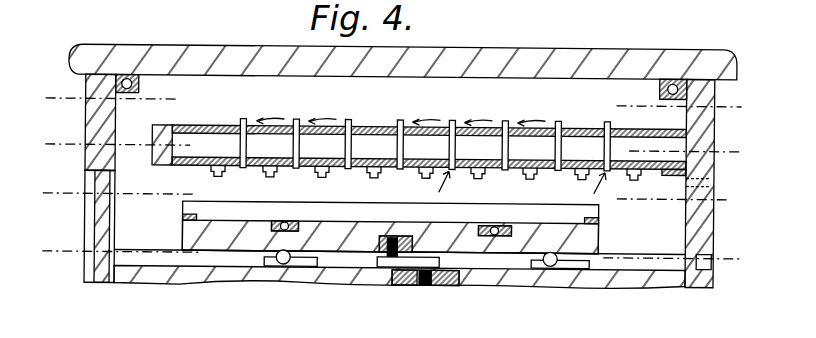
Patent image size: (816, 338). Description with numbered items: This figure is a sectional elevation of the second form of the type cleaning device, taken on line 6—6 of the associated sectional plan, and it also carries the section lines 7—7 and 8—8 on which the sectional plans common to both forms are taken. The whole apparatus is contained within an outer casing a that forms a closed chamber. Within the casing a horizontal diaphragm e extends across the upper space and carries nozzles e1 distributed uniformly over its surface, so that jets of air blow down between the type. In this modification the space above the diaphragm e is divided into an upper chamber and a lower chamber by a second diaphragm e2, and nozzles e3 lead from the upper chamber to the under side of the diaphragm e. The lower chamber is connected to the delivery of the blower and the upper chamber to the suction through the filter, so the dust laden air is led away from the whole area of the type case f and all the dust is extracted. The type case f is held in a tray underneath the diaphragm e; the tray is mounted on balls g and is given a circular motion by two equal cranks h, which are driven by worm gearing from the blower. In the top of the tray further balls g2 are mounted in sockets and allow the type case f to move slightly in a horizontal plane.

The outer casing a is at (100, 116).
The section line 6- 6 is at (391, 125).
The section line 7- 7 is at (744, 190).
The section line 8- 8 is at (388, 255).
The horizontal diaphragm e is at (290, 163).
The nozzles e1 is at (219, 179).
The diaphragm e2 is at (368, 126).
The nozzles e3 is at (211, 124).
The type case f is at (444, 234).
The balls g is at (287, 267).
The balls g2 is at (495, 224).
The cranks h is at (385, 270).